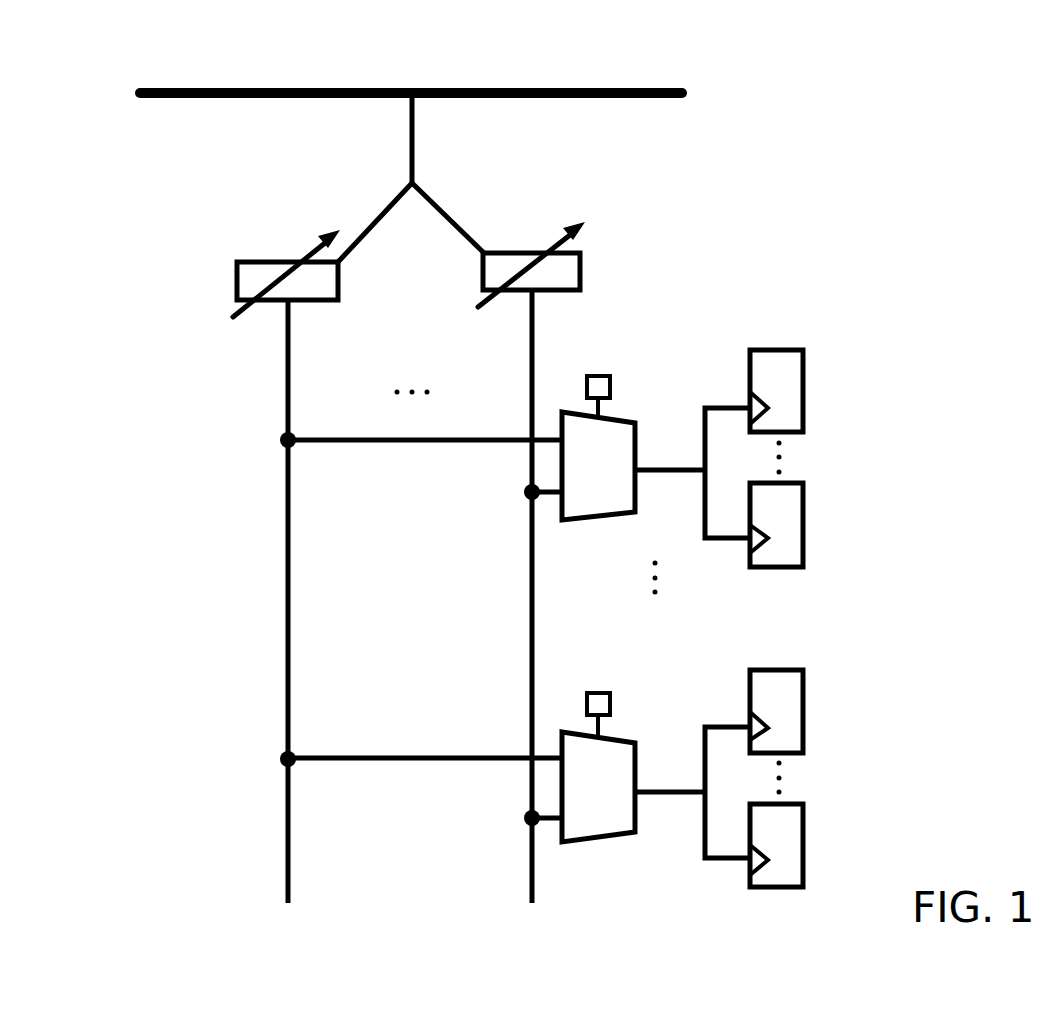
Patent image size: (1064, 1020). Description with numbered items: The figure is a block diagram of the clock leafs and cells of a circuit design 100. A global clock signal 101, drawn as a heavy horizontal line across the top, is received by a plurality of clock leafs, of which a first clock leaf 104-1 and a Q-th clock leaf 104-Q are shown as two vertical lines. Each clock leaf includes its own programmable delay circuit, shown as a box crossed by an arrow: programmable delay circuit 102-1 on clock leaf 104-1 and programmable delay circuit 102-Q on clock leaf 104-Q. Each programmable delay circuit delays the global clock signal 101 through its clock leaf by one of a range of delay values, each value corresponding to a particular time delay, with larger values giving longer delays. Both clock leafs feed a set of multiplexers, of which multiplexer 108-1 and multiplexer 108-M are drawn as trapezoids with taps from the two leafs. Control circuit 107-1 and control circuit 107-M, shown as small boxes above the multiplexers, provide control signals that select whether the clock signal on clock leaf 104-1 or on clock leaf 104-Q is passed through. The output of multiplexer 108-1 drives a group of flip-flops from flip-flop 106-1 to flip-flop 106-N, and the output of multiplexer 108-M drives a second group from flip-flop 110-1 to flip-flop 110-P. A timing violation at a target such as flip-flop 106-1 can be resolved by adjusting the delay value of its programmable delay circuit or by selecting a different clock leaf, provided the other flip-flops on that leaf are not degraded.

The circuit design 100 is at (170, 787).
The global clock signal 101 is at (538, 88).
The programmable delay circuit 102-1 is at (237, 280).
The programmable delay circuit 102-Q is at (580, 270).
The clock leaf 104-1 is at (285, 393).
The clock leaf 104-Q is at (533, 393).
The flip-flop 106-1 is at (805, 348).
The flip-flop 106-N is at (805, 482).
The control circuit 107-1 is at (600, 373).
The control circuit 107-M is at (600, 692).
The multiplexer 108-1 is at (633, 420).
The multiplexer 108-M is at (633, 740).
The flip-flop 110-1 is at (805, 668).
The flip-flop 110-P is at (805, 802).